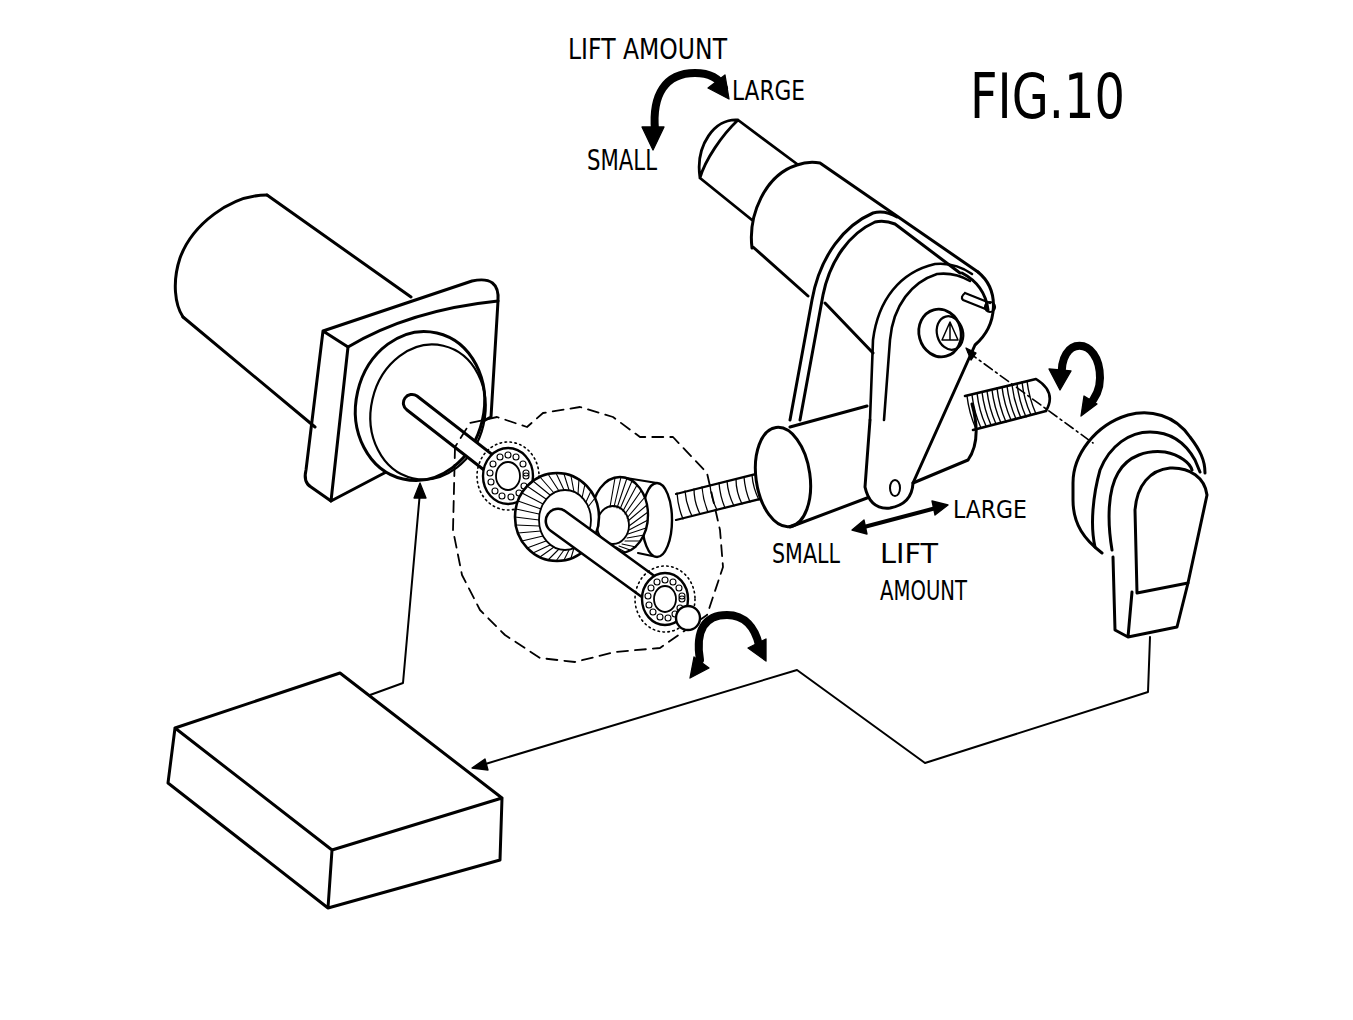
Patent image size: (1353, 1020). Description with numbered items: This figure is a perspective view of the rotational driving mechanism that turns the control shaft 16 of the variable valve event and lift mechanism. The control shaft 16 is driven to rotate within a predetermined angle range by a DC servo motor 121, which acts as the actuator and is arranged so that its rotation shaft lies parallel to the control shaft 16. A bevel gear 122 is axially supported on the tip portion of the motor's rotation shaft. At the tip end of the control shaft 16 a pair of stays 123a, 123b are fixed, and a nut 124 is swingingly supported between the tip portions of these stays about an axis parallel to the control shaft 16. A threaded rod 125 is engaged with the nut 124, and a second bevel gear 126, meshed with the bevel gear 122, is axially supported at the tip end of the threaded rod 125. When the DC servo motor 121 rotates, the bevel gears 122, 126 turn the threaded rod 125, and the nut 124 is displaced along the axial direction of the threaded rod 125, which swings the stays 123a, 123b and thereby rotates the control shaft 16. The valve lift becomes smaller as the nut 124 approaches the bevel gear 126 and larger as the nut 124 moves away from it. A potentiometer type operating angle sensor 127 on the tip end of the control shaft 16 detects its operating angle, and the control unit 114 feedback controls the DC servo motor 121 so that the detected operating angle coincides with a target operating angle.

The control shaft 16 is at (730, 192).
The control unit 114 is at (217, 803).
The DC servo motor 121 is at (330, 258).
The bevel gear 122 is at (555, 477).
The stay 123a is at (807, 350).
The stay 123b is at (973, 333).
The nut 124 is at (793, 440).
The threaded rod 125 is at (1000, 427).
The bevel gear 126 is at (627, 480).
The operating angle sensor 127 is at (1200, 453).